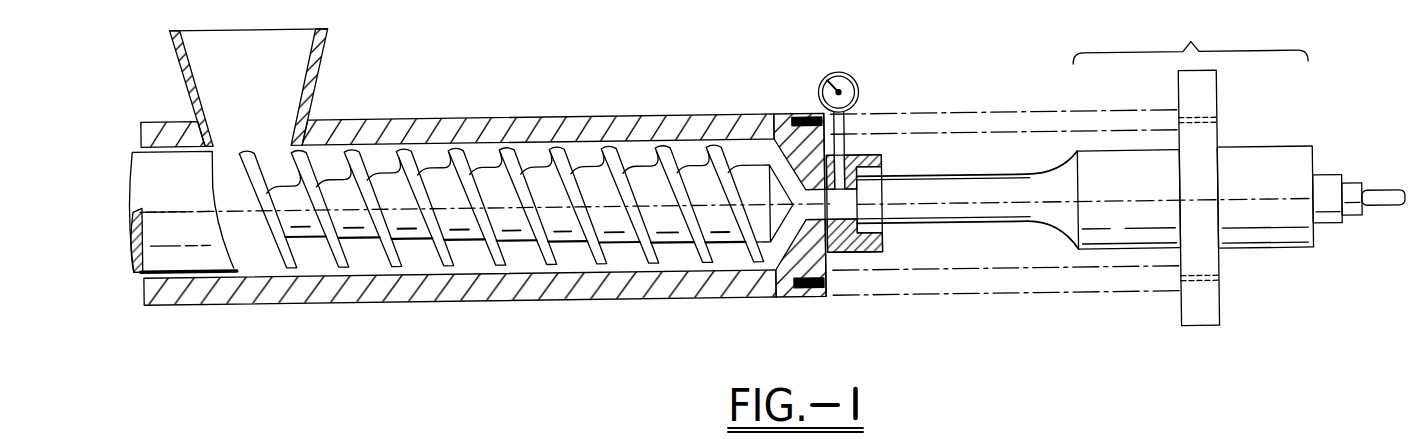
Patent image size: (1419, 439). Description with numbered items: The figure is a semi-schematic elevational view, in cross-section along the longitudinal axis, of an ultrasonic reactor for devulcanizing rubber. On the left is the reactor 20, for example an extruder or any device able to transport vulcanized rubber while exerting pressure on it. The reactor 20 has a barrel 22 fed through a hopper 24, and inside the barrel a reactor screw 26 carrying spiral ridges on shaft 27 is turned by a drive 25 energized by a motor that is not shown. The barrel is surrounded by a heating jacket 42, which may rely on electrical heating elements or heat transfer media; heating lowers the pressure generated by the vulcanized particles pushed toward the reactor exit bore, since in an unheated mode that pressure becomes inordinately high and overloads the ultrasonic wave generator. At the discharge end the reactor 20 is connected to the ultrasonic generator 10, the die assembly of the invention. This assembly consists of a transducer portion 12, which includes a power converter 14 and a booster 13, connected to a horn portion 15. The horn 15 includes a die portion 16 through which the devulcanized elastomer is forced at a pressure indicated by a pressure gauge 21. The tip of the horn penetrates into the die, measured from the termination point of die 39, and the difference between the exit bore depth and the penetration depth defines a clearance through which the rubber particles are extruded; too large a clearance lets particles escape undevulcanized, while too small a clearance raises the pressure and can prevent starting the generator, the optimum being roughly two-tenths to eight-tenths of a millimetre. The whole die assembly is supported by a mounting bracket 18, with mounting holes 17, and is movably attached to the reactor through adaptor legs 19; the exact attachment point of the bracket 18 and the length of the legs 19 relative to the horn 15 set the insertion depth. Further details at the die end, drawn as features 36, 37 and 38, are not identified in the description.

The ultrasonic generator 10 is at (744, 195).
The transducer portion 12 is at (1239, 179).
The booster 13 is at (1146, 222).
The power converter 14 is at (1276, 224).
The horn portion 15 is at (1003, 184).
The die portion 16 is at (879, 254).
The mounting holes 17 is at (797, 121).
The mounting bracket 18 is at (1190, 319).
The adaptor legs 19 is at (1020, 299).
The reactor 20 is at (458, 228).
The pressure gauge 21 is at (855, 83).
The barrel 22 is at (413, 143).
The hopper 24 is at (300, 67).
The drive 25 is at (148, 220).
The reactor screw 26 is at (485, 249).
The spiral ridges on shaft 27 is at (497, 262).
The nozzle adapter 36 is at (757, 216).
The tube end 37 is at (873, 239).
The discharge passage 38 is at (847, 203).
The termination point of die 39 is at (883, 256).
The heating jacket 42 is at (432, 301).